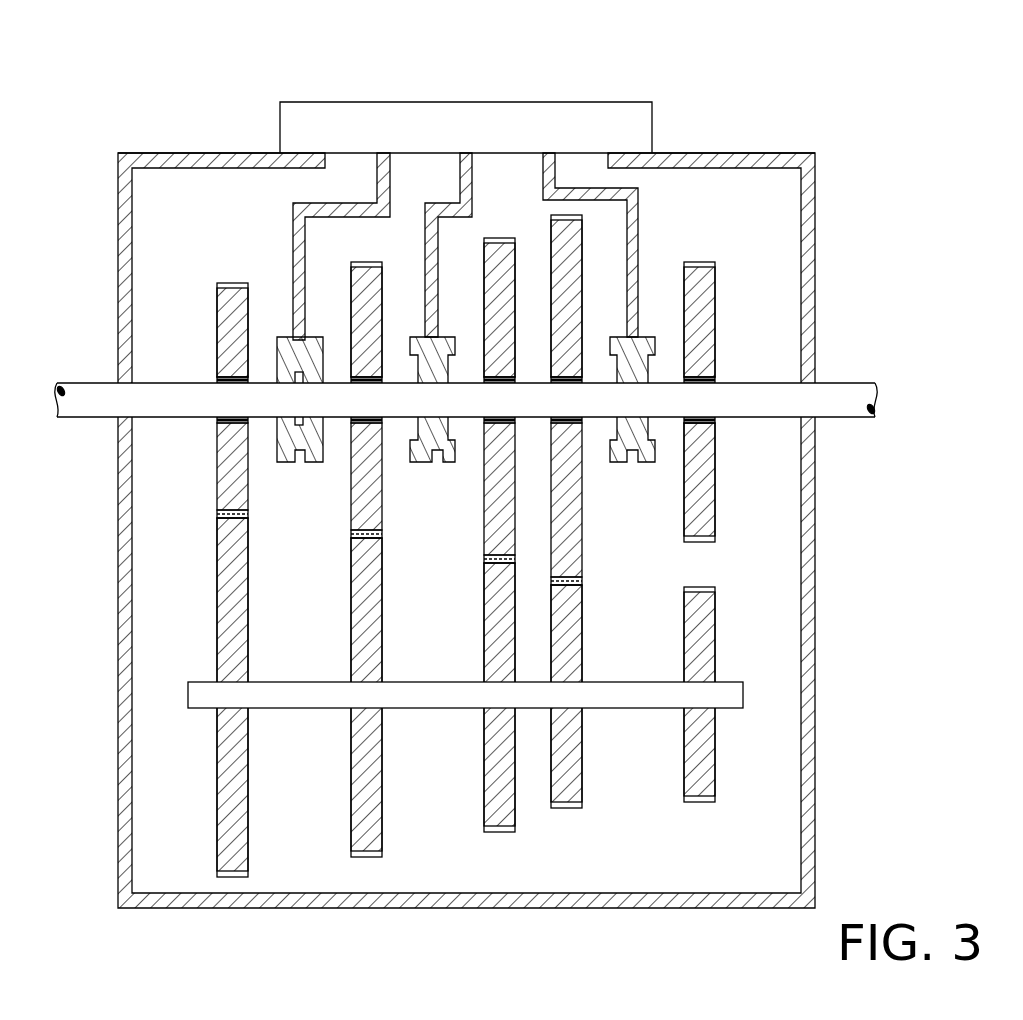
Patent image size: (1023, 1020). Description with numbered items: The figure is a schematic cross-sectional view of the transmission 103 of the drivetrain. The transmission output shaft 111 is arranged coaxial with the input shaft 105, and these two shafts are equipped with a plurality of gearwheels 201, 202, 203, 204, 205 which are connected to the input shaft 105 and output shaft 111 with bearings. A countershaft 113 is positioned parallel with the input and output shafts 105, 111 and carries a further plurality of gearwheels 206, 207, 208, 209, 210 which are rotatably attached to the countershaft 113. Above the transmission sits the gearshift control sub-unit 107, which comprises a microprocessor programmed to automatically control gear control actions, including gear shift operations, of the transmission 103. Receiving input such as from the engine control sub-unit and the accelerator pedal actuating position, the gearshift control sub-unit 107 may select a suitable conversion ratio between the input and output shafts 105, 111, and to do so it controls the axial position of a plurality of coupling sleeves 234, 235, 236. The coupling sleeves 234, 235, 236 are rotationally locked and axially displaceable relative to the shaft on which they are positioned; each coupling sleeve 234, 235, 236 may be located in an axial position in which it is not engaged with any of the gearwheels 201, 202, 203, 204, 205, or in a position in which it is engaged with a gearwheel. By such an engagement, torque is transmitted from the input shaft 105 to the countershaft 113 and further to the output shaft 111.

The transmission 103 is at (820, 94).
The input shaft 105 is at (97, 402).
The gearshift control sub-unit 107 is at (483, 127).
The output shaft 111 is at (833, 402).
The countershaft 113 is at (732, 708).
The gearwheel 201 is at (217, 473).
The gearwheel 202 is at (350, 508).
The gearwheel 203 is at (483, 533).
The gearwheel 204 is at (583, 535).
The gearwheel 205 is at (717, 478).
The gearwheel 206 is at (215, 815).
The gearwheel 207 is at (350, 810).
The gearwheel 208 is at (483, 782).
The gearwheel 209 is at (550, 765).
The gearwheel 210 is at (683, 765).
The coupling sleeve 234 is at (279, 340).
The coupling sleeve 235 is at (413, 337).
The coupling sleeve 236 is at (655, 347).